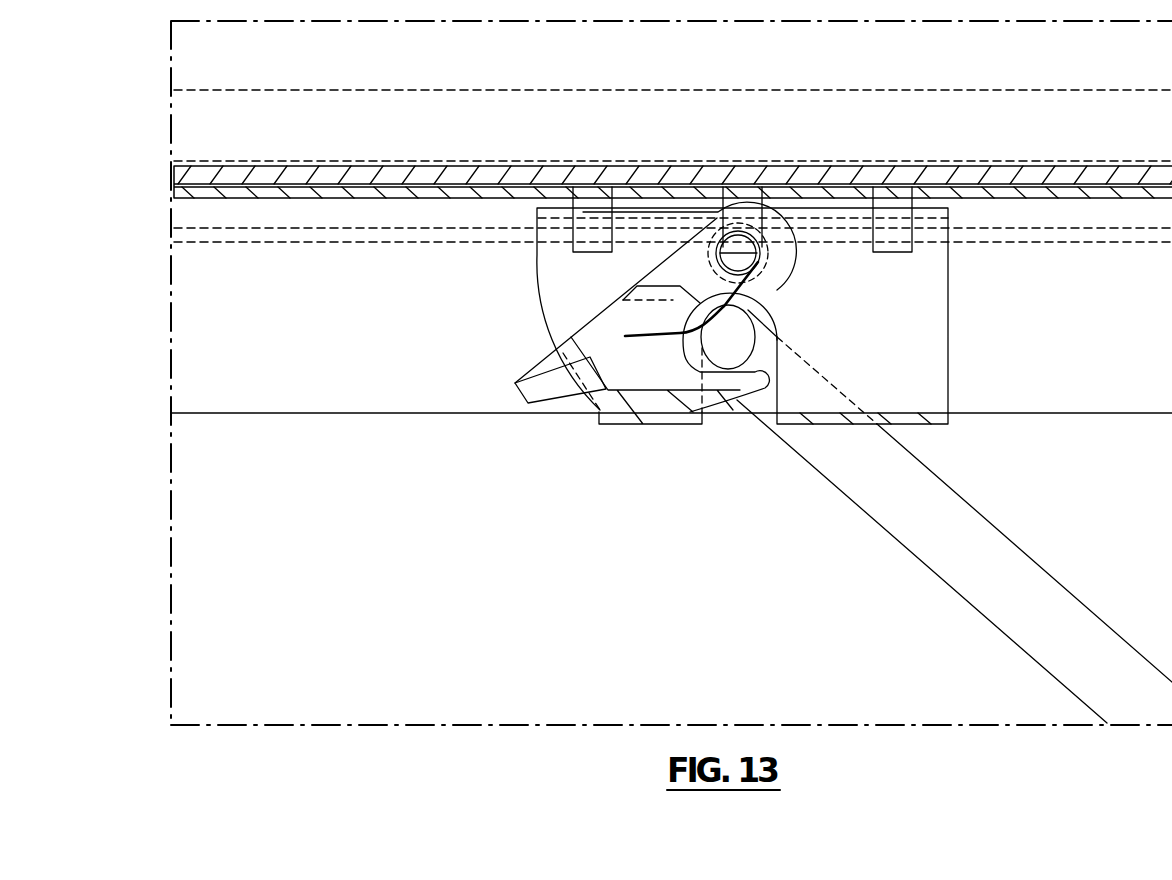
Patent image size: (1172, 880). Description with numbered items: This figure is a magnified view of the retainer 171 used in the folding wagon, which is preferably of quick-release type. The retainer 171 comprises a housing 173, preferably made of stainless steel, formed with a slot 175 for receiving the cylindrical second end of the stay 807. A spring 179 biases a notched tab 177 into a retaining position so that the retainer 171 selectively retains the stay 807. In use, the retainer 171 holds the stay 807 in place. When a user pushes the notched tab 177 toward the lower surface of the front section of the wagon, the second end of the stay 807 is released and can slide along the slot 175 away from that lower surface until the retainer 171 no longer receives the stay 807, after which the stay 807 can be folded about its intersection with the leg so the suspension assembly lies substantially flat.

The retainer 171 is at (801, 297).
The housing 173 is at (912, 318).
The slot 175 is at (780, 322).
The notched tab 177 is at (536, 374).
The spring 179 is at (702, 208).
The stay 807 is at (937, 513).